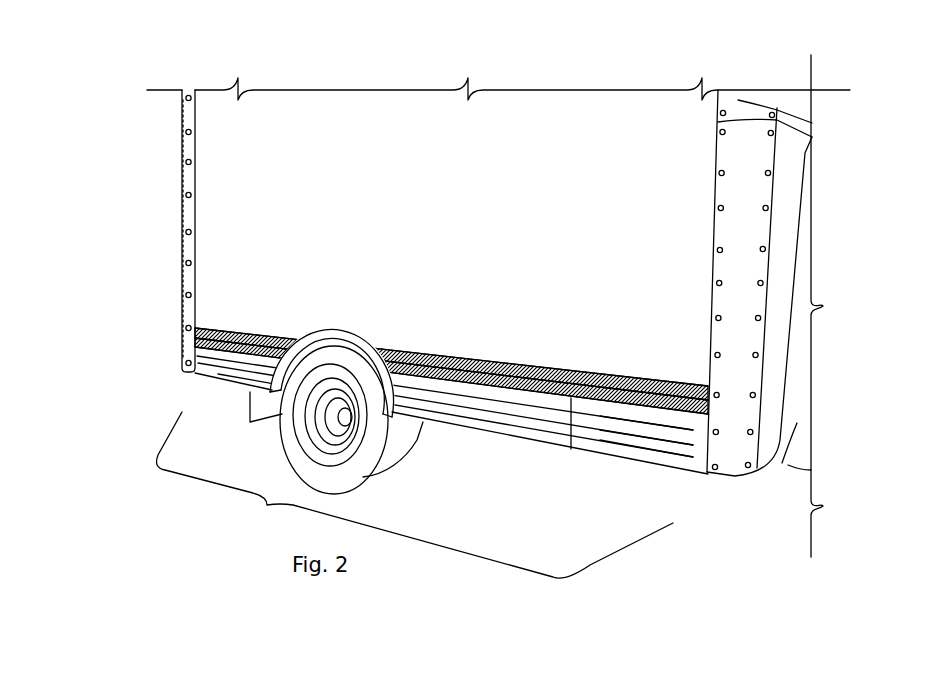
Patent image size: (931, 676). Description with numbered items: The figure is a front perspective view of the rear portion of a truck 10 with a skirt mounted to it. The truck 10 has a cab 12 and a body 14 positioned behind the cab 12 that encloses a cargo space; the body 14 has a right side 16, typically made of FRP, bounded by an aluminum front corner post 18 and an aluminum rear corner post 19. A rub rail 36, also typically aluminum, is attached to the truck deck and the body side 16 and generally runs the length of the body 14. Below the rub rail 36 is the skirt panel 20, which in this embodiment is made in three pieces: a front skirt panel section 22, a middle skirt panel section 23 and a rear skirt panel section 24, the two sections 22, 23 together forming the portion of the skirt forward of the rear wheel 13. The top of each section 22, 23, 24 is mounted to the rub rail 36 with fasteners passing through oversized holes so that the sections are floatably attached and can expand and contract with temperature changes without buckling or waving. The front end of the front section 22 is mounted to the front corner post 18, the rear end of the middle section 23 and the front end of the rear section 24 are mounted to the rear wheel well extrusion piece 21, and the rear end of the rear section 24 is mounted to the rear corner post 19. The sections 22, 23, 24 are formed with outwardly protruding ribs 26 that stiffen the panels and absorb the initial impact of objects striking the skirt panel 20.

The truck 10 is at (160, 124).
The cab 12 is at (785, 462).
The rear wheel 13 is at (320, 418).
The body 14 is at (165, 183).
The right side 16 is at (447, 209).
The front corner post 18 is at (738, 227).
The rear corner post 19 is at (183, 107).
The skirt panel 20 is at (267, 505).
The rear wheel well extrusion piece 21 is at (327, 342).
The front skirt panel section 22 is at (658, 442).
The middle skirt panel section 23 is at (478, 416).
The rear skirt panel section 24 is at (233, 385).
The ribs 26 is at (230, 358).
The rub rail 36 is at (210, 337).